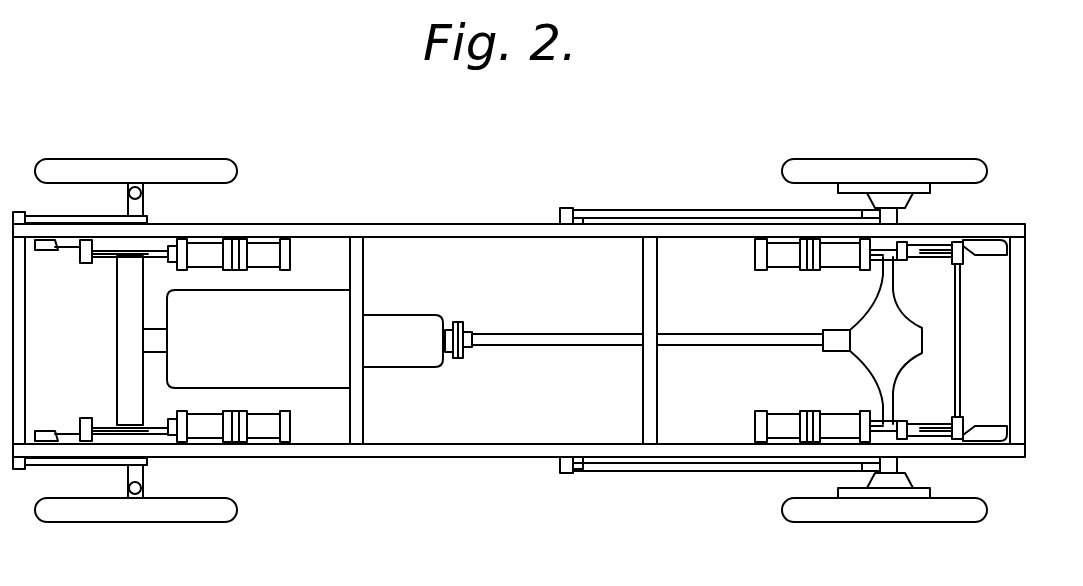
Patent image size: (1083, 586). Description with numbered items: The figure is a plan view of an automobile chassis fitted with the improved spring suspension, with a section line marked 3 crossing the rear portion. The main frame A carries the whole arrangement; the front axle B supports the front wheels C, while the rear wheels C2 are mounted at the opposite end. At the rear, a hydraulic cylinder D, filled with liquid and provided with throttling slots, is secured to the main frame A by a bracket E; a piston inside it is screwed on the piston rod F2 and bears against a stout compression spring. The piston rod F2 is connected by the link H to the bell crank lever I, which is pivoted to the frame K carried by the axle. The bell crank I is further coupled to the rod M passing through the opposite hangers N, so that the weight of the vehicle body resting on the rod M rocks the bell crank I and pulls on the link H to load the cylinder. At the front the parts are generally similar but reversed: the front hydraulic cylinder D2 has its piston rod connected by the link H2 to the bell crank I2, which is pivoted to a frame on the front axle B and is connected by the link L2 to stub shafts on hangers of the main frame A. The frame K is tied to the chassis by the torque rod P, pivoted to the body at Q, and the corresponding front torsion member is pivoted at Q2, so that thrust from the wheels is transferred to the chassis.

The main frame A is at (390, 224).
The front axle B is at (143, 283).
The front wheels C is at (222, 167).
The rear wheels C2 is at (930, 158).
The hydraulic cylinder D is at (778, 243).
The front hydraulic cylinder D2 is at (270, 247).
The bracket E is at (229, 243).
The piston rod F2 is at (160, 250).
The link H is at (918, 261).
The front link H2 is at (118, 295).
The bell crank lever I is at (933, 243).
The front bell crank I2 is at (108, 262).
The frame K is at (893, 217).
The front link L2 is at (100, 268).
The rod M is at (962, 345).
The hangers N is at (993, 240).
The torque rod P is at (34, 217).
The pivot Q is at (563, 208).
The front pivot Q2 is at (27, 278).
The section line 3- 3 is at (713, 302).